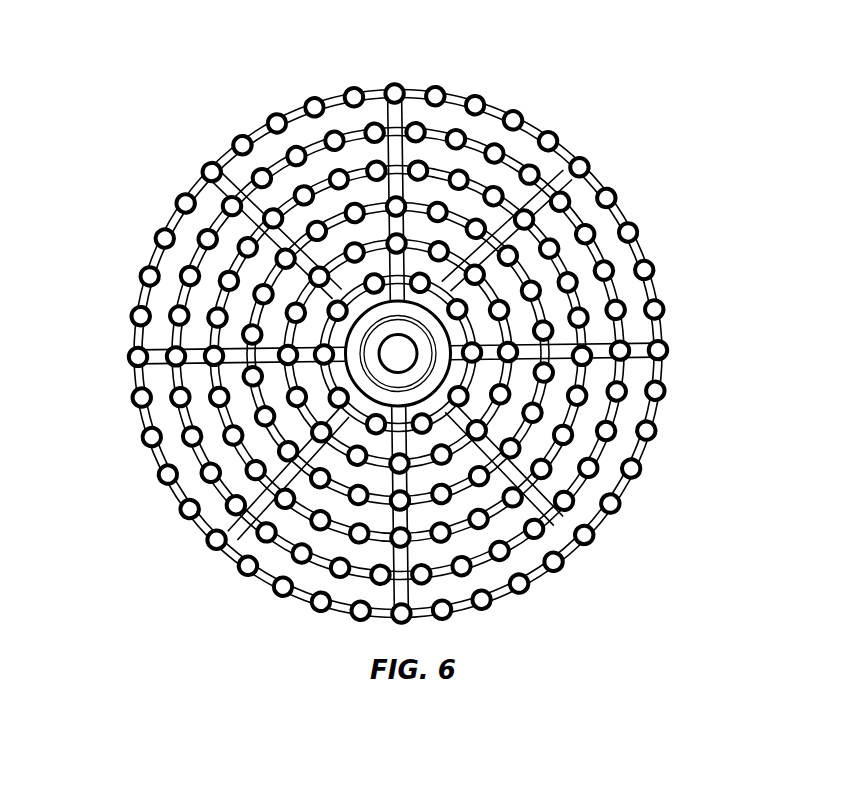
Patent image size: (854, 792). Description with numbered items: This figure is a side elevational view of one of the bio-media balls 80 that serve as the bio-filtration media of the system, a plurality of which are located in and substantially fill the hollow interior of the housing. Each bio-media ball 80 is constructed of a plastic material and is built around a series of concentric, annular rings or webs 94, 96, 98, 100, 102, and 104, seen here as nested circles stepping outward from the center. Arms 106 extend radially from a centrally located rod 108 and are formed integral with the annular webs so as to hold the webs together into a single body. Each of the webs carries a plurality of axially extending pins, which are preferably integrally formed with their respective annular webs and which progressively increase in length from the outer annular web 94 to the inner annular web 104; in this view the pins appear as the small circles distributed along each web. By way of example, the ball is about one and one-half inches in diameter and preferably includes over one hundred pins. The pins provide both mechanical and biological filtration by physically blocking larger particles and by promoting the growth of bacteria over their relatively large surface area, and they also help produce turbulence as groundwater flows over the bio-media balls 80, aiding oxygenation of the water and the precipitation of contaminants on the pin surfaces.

The bio-media ball 80 is at (215, 103).
The outer annular web 94 is at (643, 248).
The annular web 96 is at (597, 250).
The annular web 98 is at (567, 242).
The annular web 100 is at (530, 248).
The annular web 102 is at (465, 258).
The inner annular web 104 is at (443, 287).
The arms 106 is at (393, 122).
The centrally located rod 108 is at (412, 378).